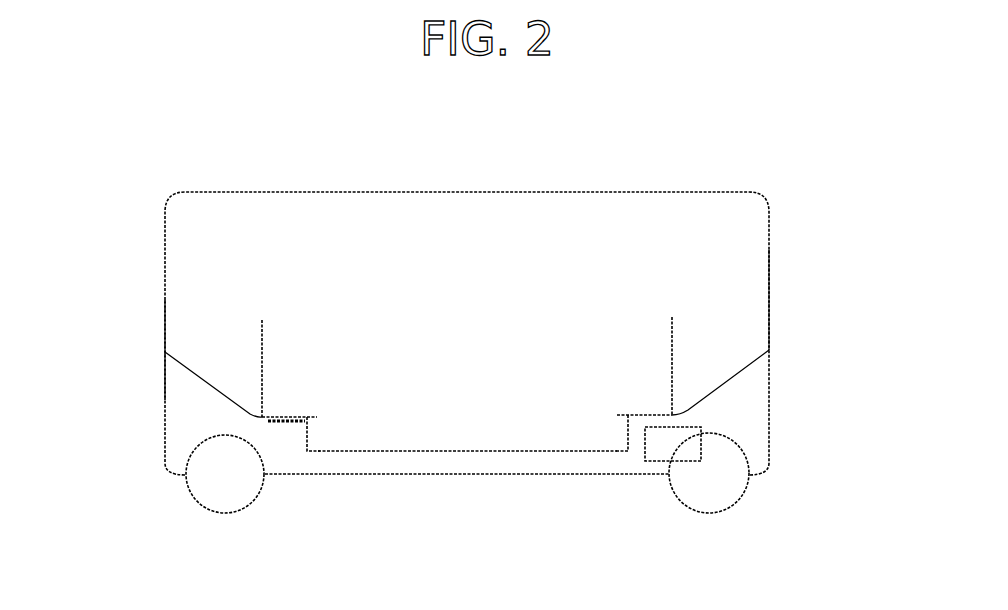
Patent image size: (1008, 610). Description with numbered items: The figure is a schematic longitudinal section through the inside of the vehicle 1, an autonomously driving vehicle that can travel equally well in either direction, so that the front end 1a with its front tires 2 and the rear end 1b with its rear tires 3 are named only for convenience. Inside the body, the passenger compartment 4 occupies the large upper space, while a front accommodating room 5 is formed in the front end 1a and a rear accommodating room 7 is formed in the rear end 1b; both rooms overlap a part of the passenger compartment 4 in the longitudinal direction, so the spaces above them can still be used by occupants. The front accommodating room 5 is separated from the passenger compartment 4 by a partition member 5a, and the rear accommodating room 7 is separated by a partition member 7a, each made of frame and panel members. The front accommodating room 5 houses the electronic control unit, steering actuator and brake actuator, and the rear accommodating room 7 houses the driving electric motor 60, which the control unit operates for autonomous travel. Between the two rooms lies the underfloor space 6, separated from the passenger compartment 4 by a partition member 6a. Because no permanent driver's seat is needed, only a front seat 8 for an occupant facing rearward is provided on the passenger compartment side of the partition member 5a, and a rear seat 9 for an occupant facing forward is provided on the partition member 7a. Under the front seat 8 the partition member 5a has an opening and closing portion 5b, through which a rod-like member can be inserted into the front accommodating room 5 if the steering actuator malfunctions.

The vehicle 1 is at (601, 188).
The front end 1a is at (165, 338).
The rear end 1b is at (773, 282).
The front tires 2 is at (208, 513).
The rear tires 3 is at (724, 513).
The passenger compartment 4 is at (458, 322).
The front accommodating room 5 is at (195, 428).
The partition member 5a is at (310, 440).
The opening and closing portion 5b is at (284, 424).
The underfloor space 6 is at (505, 462).
The partition member 6a is at (389, 453).
The rear accommodating room 7 is at (724, 426).
The partition member 7a is at (614, 440).
The front seat 8 is at (265, 357).
The rear seat 9 is at (667, 352).
The driving electric motor 60 is at (648, 447).